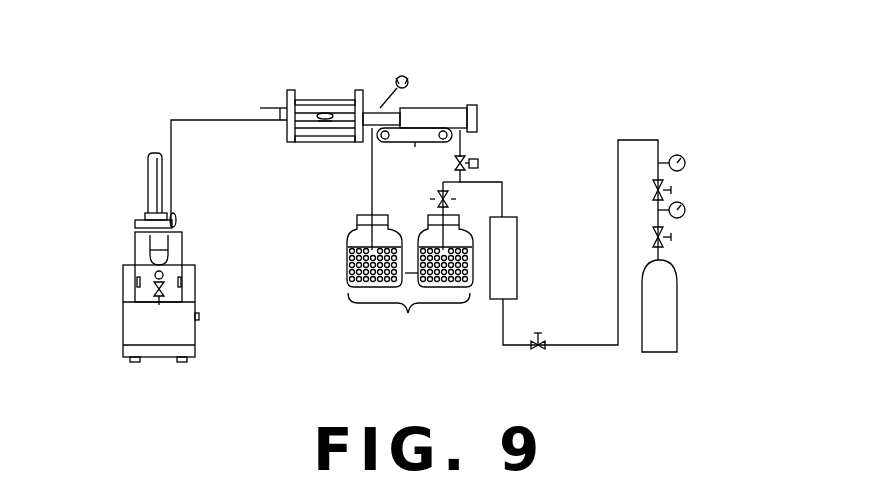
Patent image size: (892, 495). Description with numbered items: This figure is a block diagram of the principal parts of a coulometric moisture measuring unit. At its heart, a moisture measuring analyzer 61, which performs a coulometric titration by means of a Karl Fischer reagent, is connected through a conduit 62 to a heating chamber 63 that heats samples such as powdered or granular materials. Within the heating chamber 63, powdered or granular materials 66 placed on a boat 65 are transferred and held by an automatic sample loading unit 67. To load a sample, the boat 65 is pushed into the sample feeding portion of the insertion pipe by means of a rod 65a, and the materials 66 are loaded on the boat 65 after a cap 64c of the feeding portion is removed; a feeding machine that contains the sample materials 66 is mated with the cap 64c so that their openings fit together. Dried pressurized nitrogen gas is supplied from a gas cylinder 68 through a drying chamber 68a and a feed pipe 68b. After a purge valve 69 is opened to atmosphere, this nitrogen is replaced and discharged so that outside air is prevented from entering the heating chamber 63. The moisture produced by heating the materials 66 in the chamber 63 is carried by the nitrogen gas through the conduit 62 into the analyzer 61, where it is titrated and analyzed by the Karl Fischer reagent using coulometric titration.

The moisture measuring analyzer 61 is at (138, 256).
The conduit 62 is at (187, 117).
The heating chamber 63 is at (310, 100).
The cap 64c is at (410, 83).
The boat 65 is at (323, 120).
The rod 65a is at (368, 108).
The powdered or granular materials 66 is at (322, 117).
The automatic sample loading unit 67 is at (414, 147).
The gas cylinder 68 is at (663, 317).
The drying chamber 68a is at (410, 239).
The feed pipe 68b is at (563, 347).
The purge valve 69 is at (480, 163).